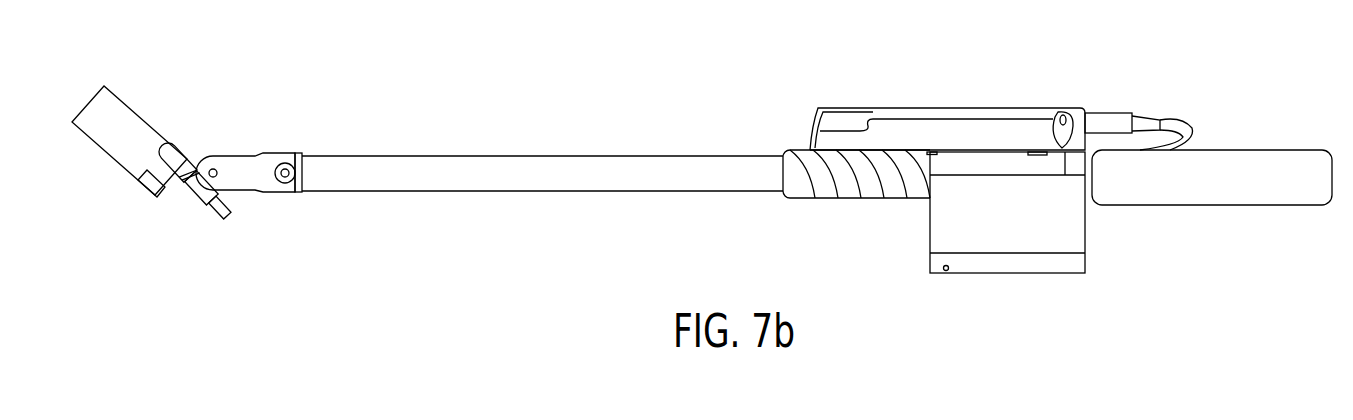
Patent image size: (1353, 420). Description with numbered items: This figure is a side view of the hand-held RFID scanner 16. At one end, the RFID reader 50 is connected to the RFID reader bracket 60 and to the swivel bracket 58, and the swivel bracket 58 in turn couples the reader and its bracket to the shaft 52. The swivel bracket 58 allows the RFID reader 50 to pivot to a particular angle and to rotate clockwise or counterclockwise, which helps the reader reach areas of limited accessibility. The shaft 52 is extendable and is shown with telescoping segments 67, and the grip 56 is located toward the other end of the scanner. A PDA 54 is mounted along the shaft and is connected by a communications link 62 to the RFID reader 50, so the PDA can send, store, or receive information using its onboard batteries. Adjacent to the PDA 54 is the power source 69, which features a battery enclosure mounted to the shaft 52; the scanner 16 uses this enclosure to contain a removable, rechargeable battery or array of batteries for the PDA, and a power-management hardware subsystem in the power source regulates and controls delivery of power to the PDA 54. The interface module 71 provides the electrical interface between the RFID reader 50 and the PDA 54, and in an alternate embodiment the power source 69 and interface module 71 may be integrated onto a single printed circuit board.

The RFID scanner 16 is at (396, 256).
The RFID reader 50 is at (113, 160).
The shaft 52 is at (545, 156).
The PDA 54 is at (950, 115).
The grip 56 is at (1213, 205).
The swivel bracket 58 is at (237, 193).
The RFID reader bracket 60 is at (177, 142).
The communications link 62 is at (1193, 128).
The telescoping segments 67 is at (822, 200).
The power source 69 is at (950, 227).
The interface module 71 is at (1065, 170).